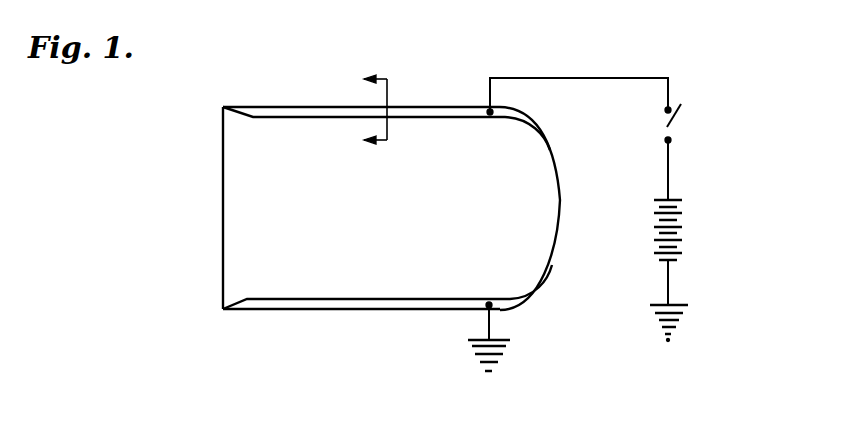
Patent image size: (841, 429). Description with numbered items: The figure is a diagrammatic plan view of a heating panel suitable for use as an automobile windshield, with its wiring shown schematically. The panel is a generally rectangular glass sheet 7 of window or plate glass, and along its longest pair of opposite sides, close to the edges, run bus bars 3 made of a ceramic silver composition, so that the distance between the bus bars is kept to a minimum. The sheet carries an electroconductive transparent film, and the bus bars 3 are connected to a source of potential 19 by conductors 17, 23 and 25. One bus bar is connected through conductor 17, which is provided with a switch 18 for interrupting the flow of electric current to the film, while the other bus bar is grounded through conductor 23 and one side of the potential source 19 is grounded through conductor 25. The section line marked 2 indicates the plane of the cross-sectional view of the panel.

The glass sheet 7 is at (235, 217).
The bus bars 3 is at (273, 111).
The section line 2- 2 is at (375, 110).
The conductor 17 is at (586, 76).
The switch 18 is at (678, 118).
The source of potential 19 is at (677, 238).
The conductor 25 is at (670, 297).
The conductor 23 is at (491, 326).